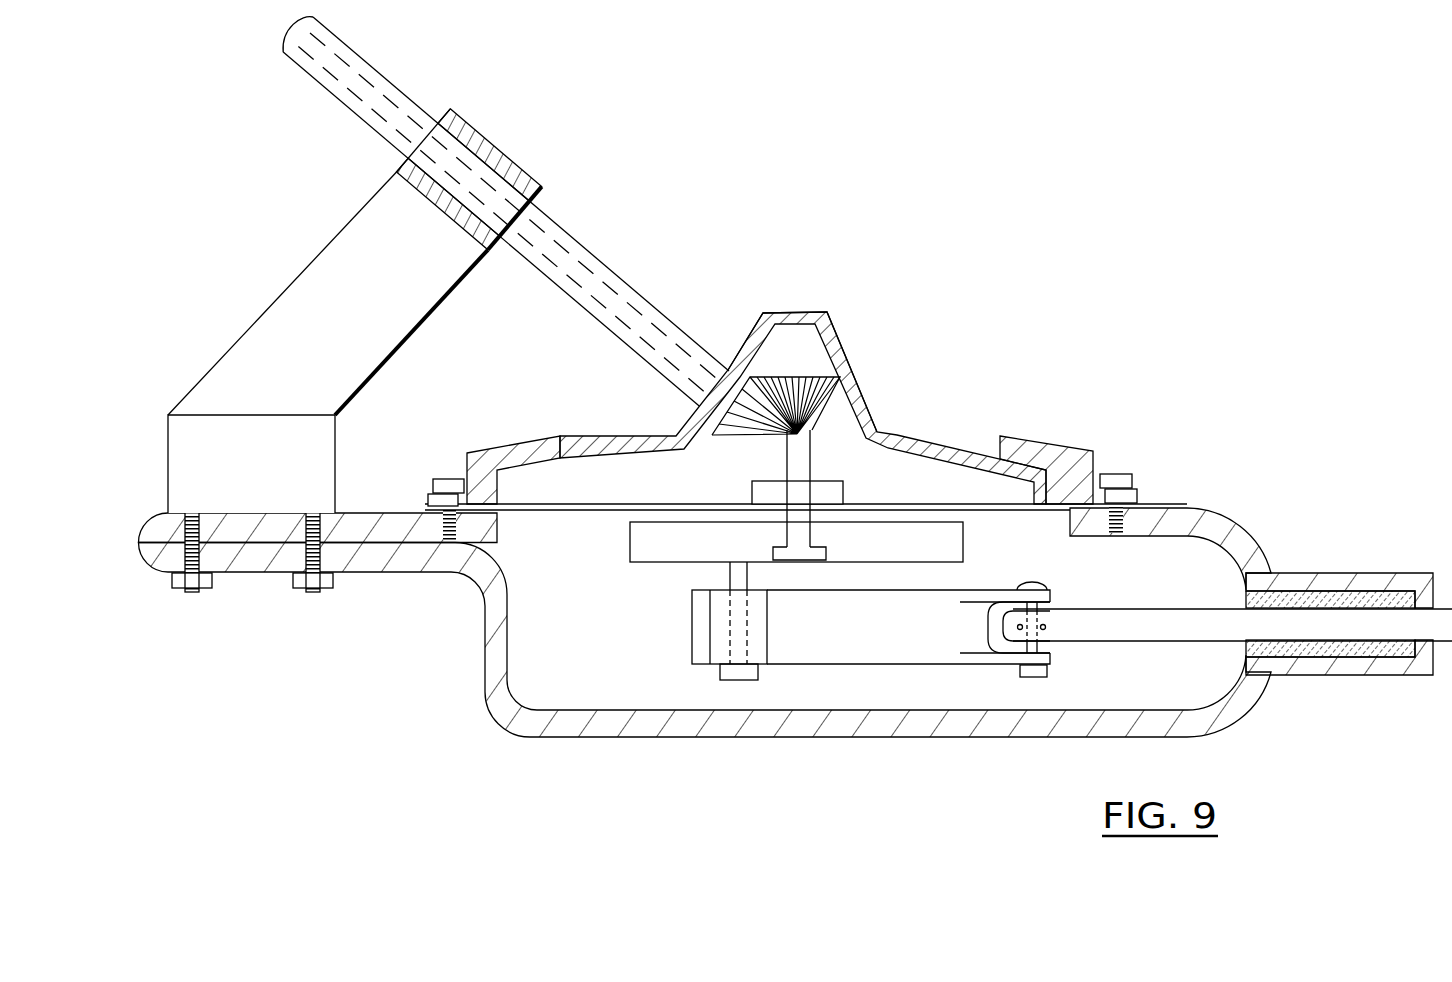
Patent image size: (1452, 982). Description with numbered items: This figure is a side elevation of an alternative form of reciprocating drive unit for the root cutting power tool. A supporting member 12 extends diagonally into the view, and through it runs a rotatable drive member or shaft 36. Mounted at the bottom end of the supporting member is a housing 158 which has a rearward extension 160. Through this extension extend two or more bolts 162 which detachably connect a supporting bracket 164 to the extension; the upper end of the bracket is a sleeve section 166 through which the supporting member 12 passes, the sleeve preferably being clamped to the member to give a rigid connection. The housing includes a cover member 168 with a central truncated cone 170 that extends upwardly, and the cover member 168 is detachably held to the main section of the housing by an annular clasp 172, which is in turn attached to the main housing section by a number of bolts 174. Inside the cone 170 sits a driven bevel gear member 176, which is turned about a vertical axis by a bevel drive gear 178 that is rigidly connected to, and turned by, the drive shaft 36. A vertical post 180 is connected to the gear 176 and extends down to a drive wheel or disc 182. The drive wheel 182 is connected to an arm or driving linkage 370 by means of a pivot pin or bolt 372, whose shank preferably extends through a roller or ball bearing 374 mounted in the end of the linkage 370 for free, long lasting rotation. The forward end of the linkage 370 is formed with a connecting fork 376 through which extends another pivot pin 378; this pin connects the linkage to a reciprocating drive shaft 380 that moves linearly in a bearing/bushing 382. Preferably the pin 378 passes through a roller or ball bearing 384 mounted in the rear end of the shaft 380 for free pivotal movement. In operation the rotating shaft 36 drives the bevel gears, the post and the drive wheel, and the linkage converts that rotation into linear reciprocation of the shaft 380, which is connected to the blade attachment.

The supporting member 12 is at (587, 253).
The rotatable drive member or shaft 36 is at (647, 300).
The housing 158 is at (1230, 517).
The rearward extension 160 is at (390, 557).
The bolts 162 is at (297, 592).
The supporting bracket 164 is at (430, 290).
The sleeve section 166 is at (505, 155).
The cover member 168 is at (942, 444).
The truncated cone 170 is at (850, 343).
The annular clasp 172 is at (1050, 447).
The bolts 174 is at (1123, 476).
The driven bevel gear member 176 is at (838, 398).
The bevel drive gear 178 is at (730, 440).
The vertical post 180 is at (803, 460).
The drive wheel or disc 182 is at (960, 540).
The arm or driving linkage 370 is at (860, 645).
The pivot pin or bolt 372 is at (733, 673).
The roller or ball bearing 374 is at (730, 630).
The connecting fork 376 is at (1048, 587).
The pivot pin 378 is at (1025, 672).
The reciprocating drive shaft 380 is at (1200, 617).
The bearing/bushing 382 is at (1350, 593).
The roller or ball bearing 384 is at (1048, 632).